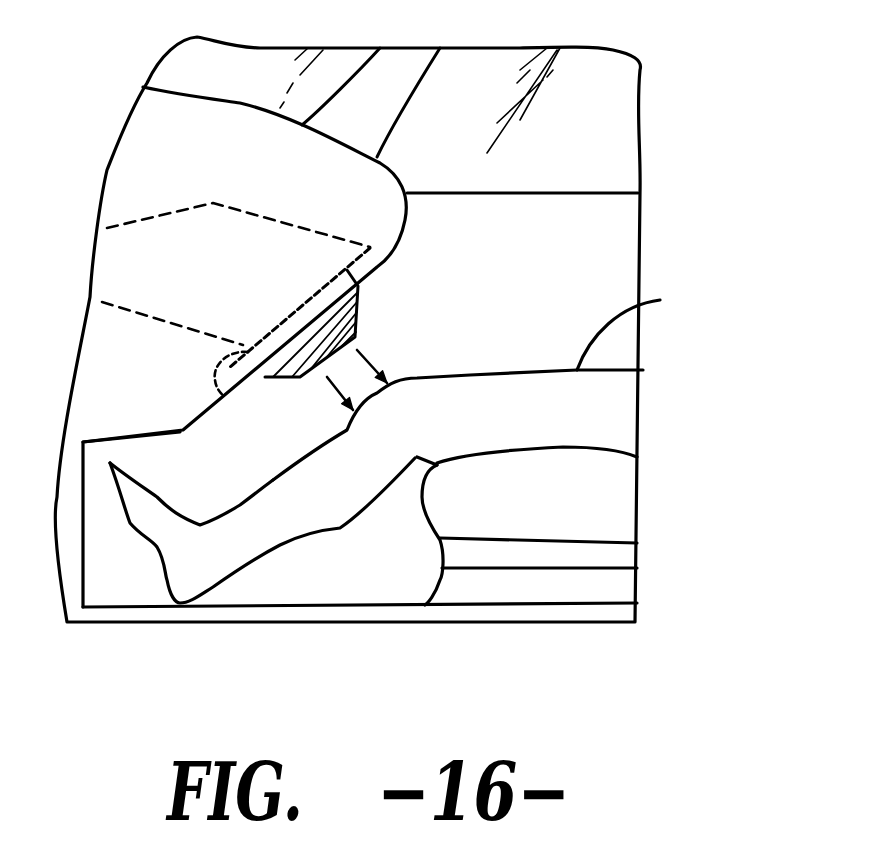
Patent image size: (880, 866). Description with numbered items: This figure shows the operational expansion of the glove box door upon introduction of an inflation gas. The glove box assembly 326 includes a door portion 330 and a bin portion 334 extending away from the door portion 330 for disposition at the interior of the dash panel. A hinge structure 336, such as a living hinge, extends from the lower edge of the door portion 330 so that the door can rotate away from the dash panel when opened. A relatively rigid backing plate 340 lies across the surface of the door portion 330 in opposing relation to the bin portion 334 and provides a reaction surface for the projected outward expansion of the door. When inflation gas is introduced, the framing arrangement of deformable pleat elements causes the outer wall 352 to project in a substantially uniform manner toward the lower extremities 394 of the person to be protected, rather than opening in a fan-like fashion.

The glove box assembly 326 is at (527, 250).
The door portion 330 is at (375, 309).
The bin portion 334 is at (296, 220).
The hinge structure 336 is at (210, 404).
The backing plate 340 is at (280, 318).
The outer wall 352 is at (312, 378).
The lower extremities 394 is at (660, 300).